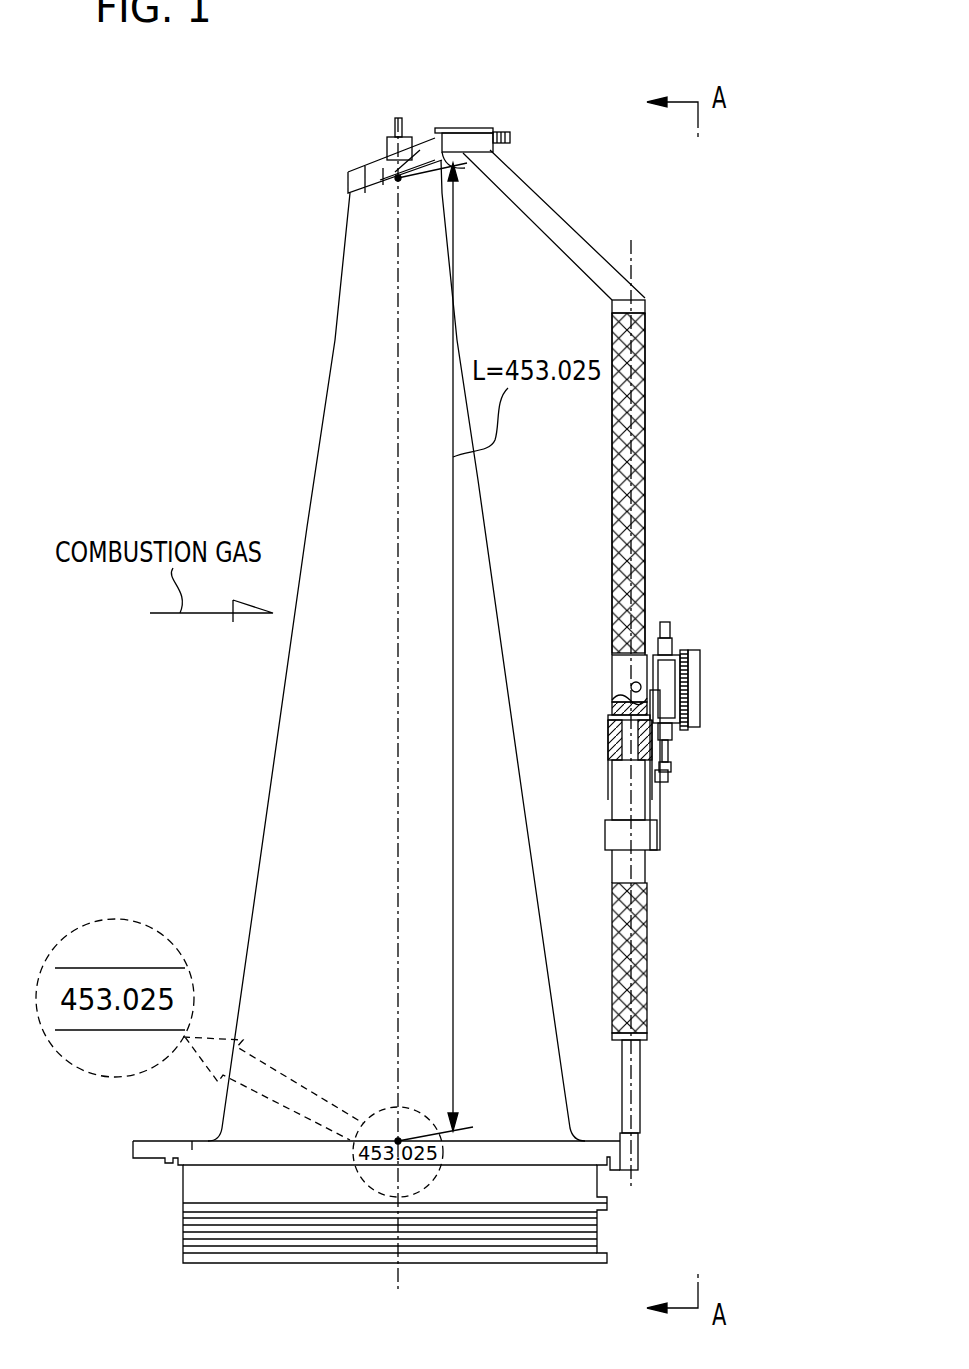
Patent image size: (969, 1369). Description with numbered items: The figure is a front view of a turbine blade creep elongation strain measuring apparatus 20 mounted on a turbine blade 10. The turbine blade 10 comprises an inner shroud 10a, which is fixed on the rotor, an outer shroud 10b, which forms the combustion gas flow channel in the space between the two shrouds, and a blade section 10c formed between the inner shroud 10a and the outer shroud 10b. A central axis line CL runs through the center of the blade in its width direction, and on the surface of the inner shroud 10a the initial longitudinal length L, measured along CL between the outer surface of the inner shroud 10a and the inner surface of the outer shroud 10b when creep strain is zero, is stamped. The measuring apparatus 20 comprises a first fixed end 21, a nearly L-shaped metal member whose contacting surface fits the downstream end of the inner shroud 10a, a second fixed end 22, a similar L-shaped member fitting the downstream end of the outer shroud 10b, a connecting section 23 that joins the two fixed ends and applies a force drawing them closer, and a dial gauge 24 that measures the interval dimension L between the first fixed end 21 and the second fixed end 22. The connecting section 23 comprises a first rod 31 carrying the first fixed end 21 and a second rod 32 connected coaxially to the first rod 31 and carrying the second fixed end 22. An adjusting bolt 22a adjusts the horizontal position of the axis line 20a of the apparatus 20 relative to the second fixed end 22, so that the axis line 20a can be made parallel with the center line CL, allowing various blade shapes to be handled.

The turbine blade 10 is at (367, 690).
The inner shroud 10a is at (190, 1142).
The outer shroud 10b is at (348, 185).
The blade section 10c is at (290, 722).
The turbine blade creep elongation strain measuring apparatus 20 is at (619, 622).
The axis line 20a is at (612, 580).
The first fixed end 21 is at (640, 1148).
The second fixed end 22 is at (478, 128).
The adjusting bolt 22a is at (500, 152).
The connecting section 23 is at (629, 477).
The dial gauge 24 is at (700, 685).
The first rod 31 is at (650, 960).
The second rod 32 is at (648, 525).